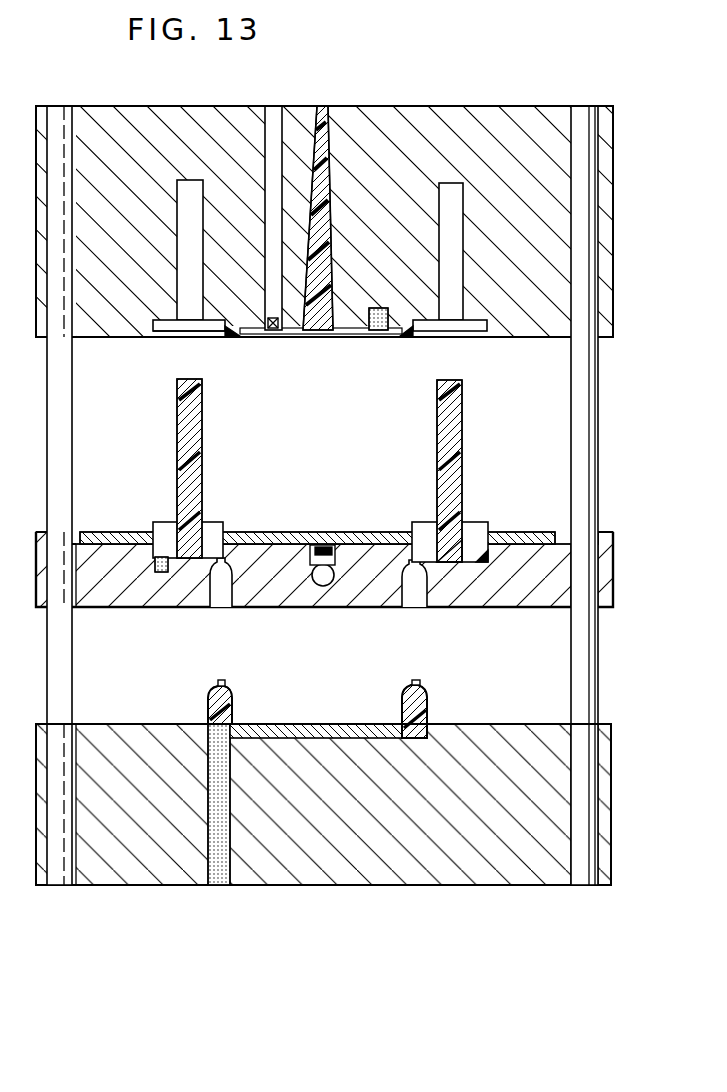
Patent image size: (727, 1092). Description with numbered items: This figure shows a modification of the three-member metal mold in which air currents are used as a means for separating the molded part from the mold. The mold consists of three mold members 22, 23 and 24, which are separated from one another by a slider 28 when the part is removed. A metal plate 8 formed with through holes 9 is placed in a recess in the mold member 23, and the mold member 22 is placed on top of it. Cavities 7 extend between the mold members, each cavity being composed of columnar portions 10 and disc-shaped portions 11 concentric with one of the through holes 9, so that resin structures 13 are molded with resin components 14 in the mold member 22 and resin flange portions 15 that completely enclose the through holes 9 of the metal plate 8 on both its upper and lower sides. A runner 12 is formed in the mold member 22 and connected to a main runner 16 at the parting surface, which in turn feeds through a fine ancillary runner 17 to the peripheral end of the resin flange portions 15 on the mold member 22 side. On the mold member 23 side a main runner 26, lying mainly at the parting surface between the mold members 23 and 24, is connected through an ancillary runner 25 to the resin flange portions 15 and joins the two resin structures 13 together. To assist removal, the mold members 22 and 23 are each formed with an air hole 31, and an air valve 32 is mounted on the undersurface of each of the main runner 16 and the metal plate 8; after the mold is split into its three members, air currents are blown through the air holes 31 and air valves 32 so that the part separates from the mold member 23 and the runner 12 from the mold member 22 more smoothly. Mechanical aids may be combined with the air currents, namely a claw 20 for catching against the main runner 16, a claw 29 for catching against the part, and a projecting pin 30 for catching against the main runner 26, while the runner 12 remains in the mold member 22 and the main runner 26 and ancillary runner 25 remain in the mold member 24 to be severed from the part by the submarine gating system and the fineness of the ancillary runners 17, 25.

The cavities 7 is at (193, 192).
The metal plate 8 is at (537, 538).
The through holes 9 is at (441, 538).
The columnar portions 10 is at (205, 331).
The disc-shaped portions 11 is at (165, 334).
The runner 12 is at (329, 142).
The resin structures 13 is at (192, 428).
The resin components 14 is at (440, 434).
The resin flange portions 15 is at (222, 528).
The main runner 16 is at (342, 338).
The ancillary runner 17 is at (228, 334).
The claw 20 is at (378, 332).
The mold member 22 is at (556, 236).
The mold member 23 is at (560, 576).
The mold member 24 is at (556, 784).
The ancillary runner 25 is at (222, 683).
The main runner 26 is at (256, 727).
The slider 28 is at (62, 880).
The claw 29 is at (160, 575).
The projecting pin 30 is at (212, 780).
The air hole 31 is at (278, 140).
The air valve 32 is at (268, 320).